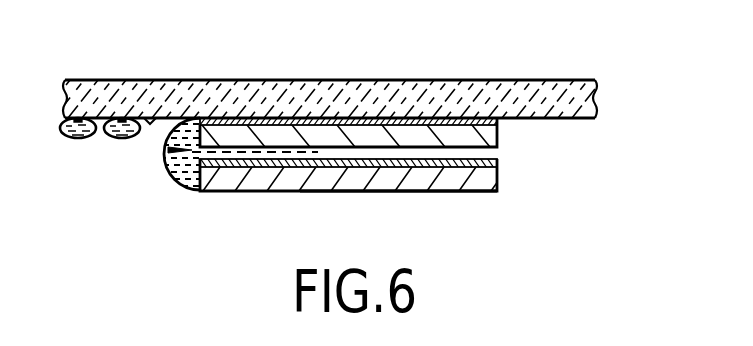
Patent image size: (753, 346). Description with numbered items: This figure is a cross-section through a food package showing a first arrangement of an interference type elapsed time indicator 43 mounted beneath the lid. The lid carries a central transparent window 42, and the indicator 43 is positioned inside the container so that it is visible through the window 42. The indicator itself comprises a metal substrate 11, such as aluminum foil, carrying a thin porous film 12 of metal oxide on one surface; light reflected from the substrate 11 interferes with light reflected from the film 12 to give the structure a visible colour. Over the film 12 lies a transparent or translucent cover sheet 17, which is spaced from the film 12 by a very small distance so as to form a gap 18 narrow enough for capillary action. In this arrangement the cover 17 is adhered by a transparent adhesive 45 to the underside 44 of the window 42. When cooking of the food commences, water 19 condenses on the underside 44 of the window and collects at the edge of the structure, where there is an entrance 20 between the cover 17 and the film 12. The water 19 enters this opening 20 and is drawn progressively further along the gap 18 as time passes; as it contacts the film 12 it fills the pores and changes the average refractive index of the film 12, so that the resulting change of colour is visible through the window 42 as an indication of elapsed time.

The metal substrate 11 is at (455, 189).
The porous film 12 is at (498, 164).
The cover sheet 17 is at (498, 141).
The gap 18 is at (498, 152).
The water 19 is at (188, 174).
The entrance 20 is at (168, 155).
The window 42 is at (487, 81).
The elapsed time indicator 43 is at (512, 193).
The underside of the window 44 is at (150, 118).
The transparent adhesive 45 is at (498, 125).